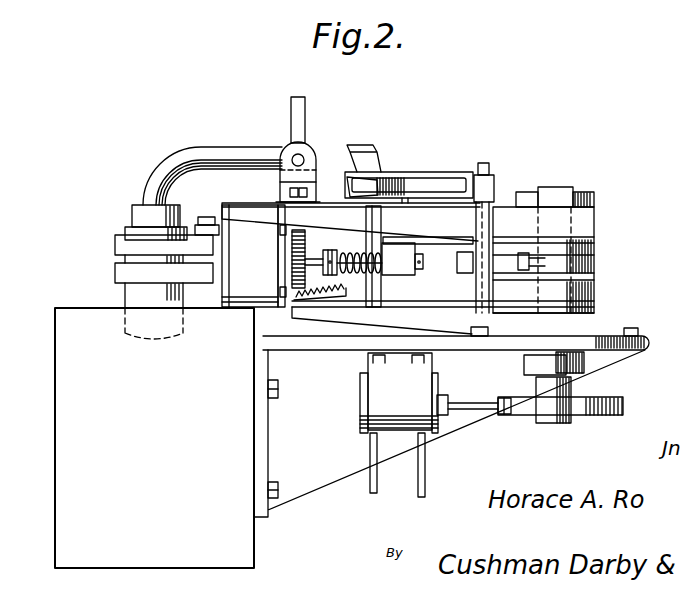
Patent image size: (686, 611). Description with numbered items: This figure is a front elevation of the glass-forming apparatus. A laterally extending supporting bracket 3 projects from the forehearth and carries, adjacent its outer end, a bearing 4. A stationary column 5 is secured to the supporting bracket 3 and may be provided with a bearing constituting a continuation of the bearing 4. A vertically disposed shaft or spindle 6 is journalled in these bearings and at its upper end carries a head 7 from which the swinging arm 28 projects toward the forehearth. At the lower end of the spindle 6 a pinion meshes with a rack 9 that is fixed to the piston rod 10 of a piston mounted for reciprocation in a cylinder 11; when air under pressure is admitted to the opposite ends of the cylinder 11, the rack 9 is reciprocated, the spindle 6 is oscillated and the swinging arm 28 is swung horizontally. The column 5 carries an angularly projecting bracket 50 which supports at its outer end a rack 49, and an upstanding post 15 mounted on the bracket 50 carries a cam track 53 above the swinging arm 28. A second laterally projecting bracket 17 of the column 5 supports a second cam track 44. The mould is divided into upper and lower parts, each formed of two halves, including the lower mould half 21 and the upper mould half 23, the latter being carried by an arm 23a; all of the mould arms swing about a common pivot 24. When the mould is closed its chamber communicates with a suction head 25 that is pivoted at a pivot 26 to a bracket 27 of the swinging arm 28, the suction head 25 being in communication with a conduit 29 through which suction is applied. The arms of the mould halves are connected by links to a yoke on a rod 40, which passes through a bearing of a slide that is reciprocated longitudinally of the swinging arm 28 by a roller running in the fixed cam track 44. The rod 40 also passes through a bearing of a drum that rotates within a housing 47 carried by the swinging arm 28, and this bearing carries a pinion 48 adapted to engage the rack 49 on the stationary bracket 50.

The supporting bracket 3 is at (318, 344).
The bearing 4 is at (583, 362).
The stationary column 5 is at (578, 292).
The shaft or spindle 6 is at (560, 188).
The head 7 is at (596, 202).
The rack 9 is at (612, 418).
The piston rod 10 is at (478, 402).
The cylinder 11 is at (412, 409).
The upstanding post 15 is at (484, 212).
The second laterally projecting bracket 17 is at (555, 275).
The lower mould half 21 is at (190, 277).
The upper mould half 23 is at (125, 233).
The arm 23a is at (185, 248).
The common pivot 24 is at (207, 217).
The suction head 25 is at (140, 210).
The pivot 26 is at (300, 154).
The bracket 27 is at (308, 180).
The swinging arm 28 is at (408, 255).
The conduit 29 is at (292, 110).
The rod 40 is at (315, 262).
The second cam track 44 is at (503, 262).
The housing 47 is at (247, 293).
The pinion 48 is at (300, 230).
The rack 49 is at (308, 303).
The angularly projecting bracket 50 is at (373, 317).
The cam track 53 is at (420, 180).